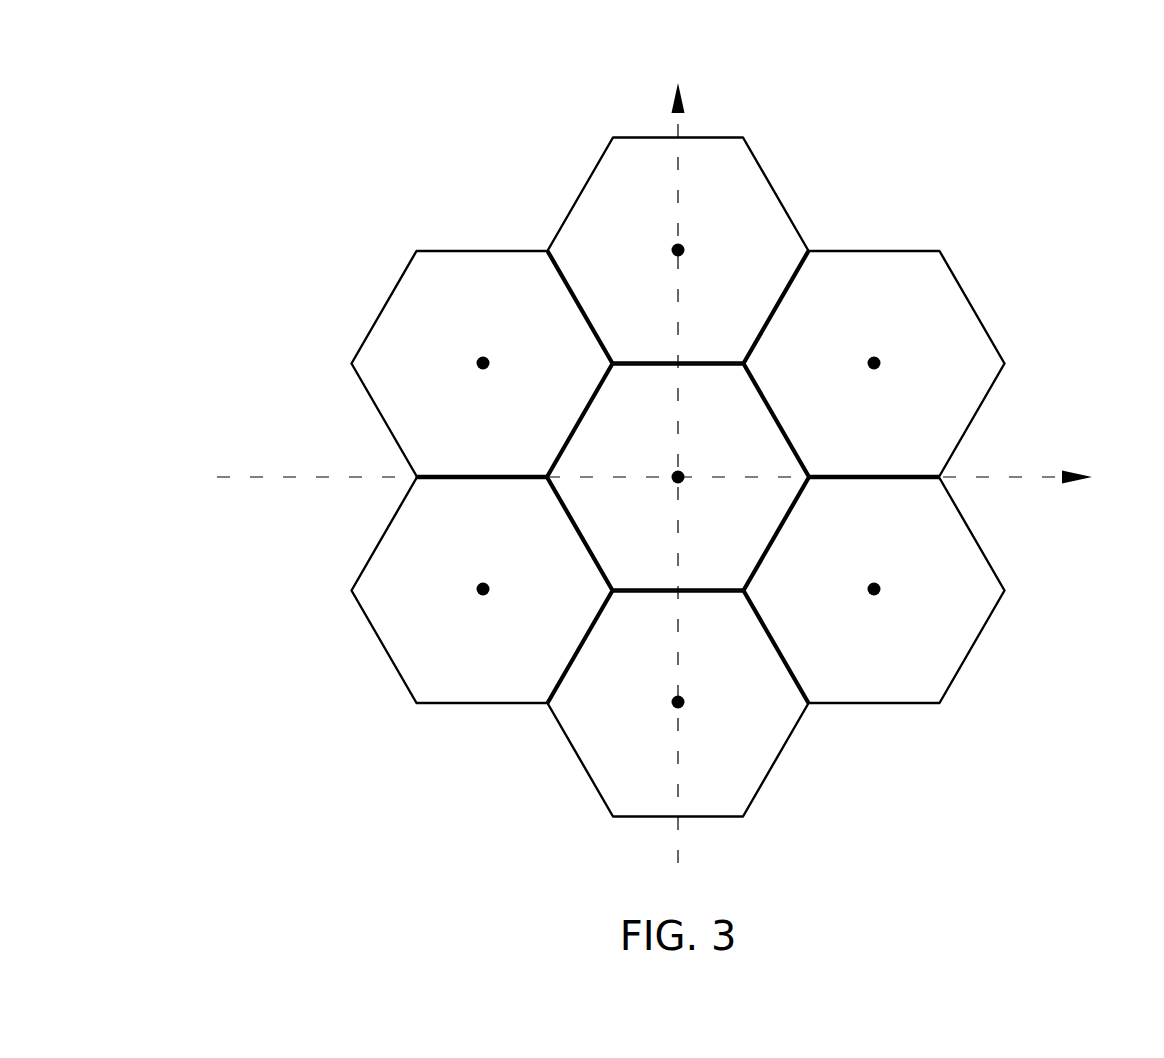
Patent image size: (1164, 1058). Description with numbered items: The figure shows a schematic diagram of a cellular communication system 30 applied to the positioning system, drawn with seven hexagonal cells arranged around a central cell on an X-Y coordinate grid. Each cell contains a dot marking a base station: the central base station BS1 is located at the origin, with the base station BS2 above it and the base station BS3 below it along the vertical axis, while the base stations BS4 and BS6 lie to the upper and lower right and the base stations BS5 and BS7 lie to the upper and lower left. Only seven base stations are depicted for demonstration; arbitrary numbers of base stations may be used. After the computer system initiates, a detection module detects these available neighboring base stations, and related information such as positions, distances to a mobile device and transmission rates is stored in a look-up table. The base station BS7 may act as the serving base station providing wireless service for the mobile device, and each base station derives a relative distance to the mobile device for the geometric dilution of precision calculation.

The cellular communication system 30 is at (1050, 190).
The base station BS1 is at (678, 477).
The base station BS2 is at (678, 250).
The base station BS3 is at (678, 704).
The base station BS4 is at (875, 363).
The base station BS5 is at (482, 363).
The base station BS6 is at (875, 590).
The base station BS7 is at (482, 590).